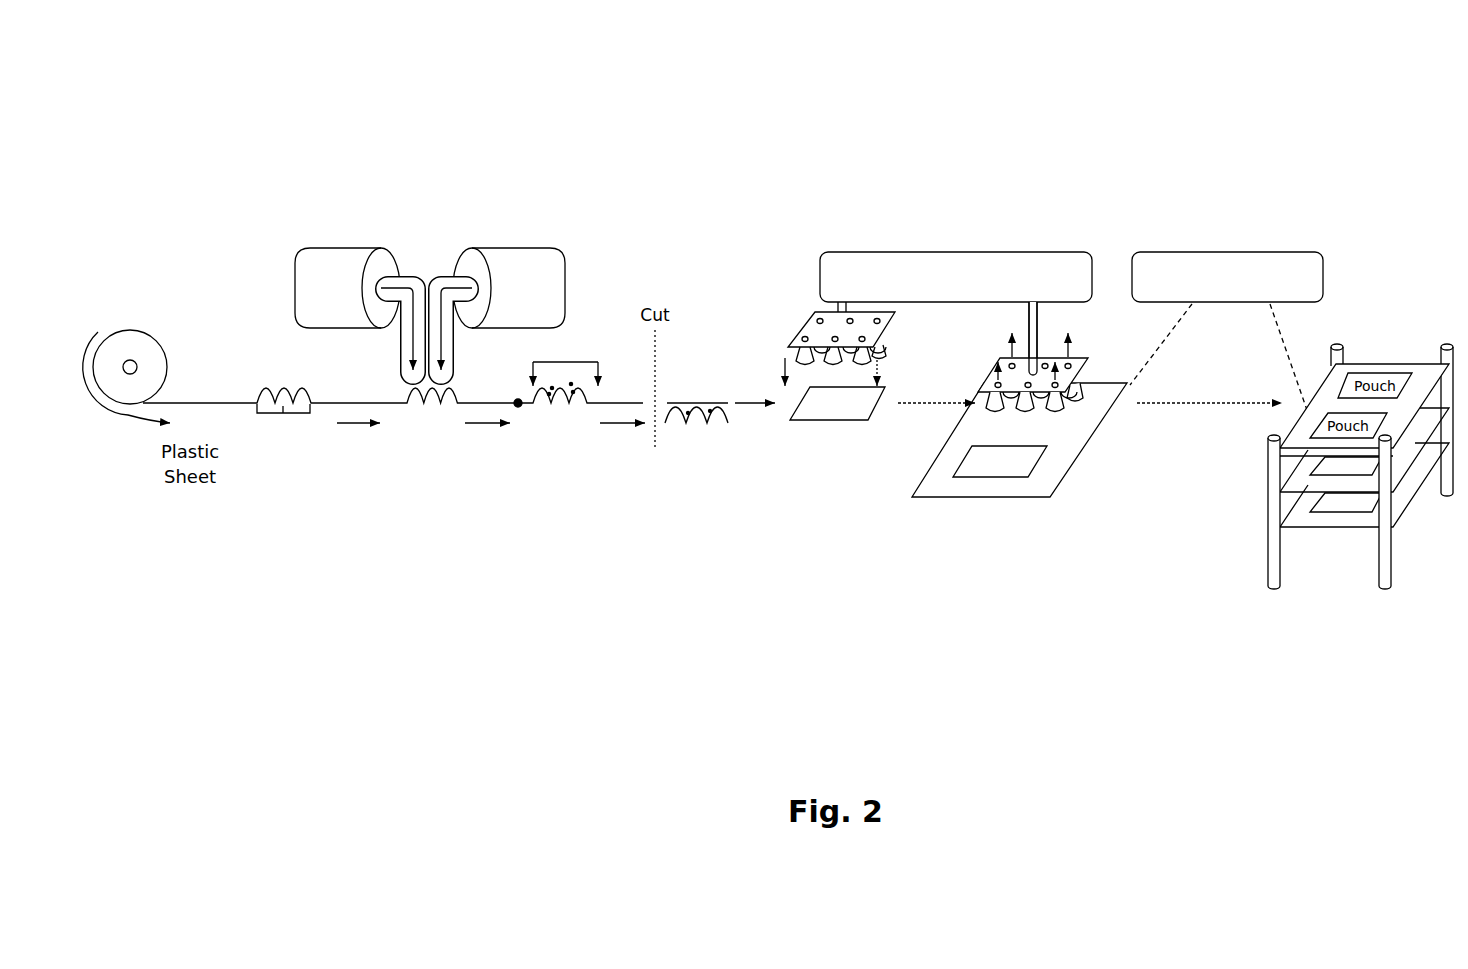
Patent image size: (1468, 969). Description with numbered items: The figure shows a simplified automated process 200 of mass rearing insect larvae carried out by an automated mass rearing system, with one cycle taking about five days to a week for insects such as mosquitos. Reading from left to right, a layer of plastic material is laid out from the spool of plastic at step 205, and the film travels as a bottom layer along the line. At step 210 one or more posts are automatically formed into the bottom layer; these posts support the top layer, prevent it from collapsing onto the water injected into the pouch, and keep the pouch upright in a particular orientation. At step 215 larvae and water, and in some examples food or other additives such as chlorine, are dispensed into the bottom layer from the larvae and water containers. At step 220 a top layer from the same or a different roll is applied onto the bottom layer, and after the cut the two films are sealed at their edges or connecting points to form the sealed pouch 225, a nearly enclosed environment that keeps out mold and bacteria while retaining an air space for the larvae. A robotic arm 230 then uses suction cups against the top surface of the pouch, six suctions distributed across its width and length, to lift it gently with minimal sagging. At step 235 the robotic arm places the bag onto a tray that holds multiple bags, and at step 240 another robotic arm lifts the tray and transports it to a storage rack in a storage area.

The automated process 200 is at (1147, 72).
The plastic layer laid out from spool 205 is at (137, 293).
The post forming step 210 is at (287, 453).
The larvae and water dispensing step 215 is at (422, 242).
The pouch forming step 220 is at (557, 417).
The sealed pouch 225 is at (703, 462).
The robotic arm with suction 230 is at (838, 250).
The tray placement step 235 is at (1067, 475).
The tray transport step 240 is at (1295, 252).